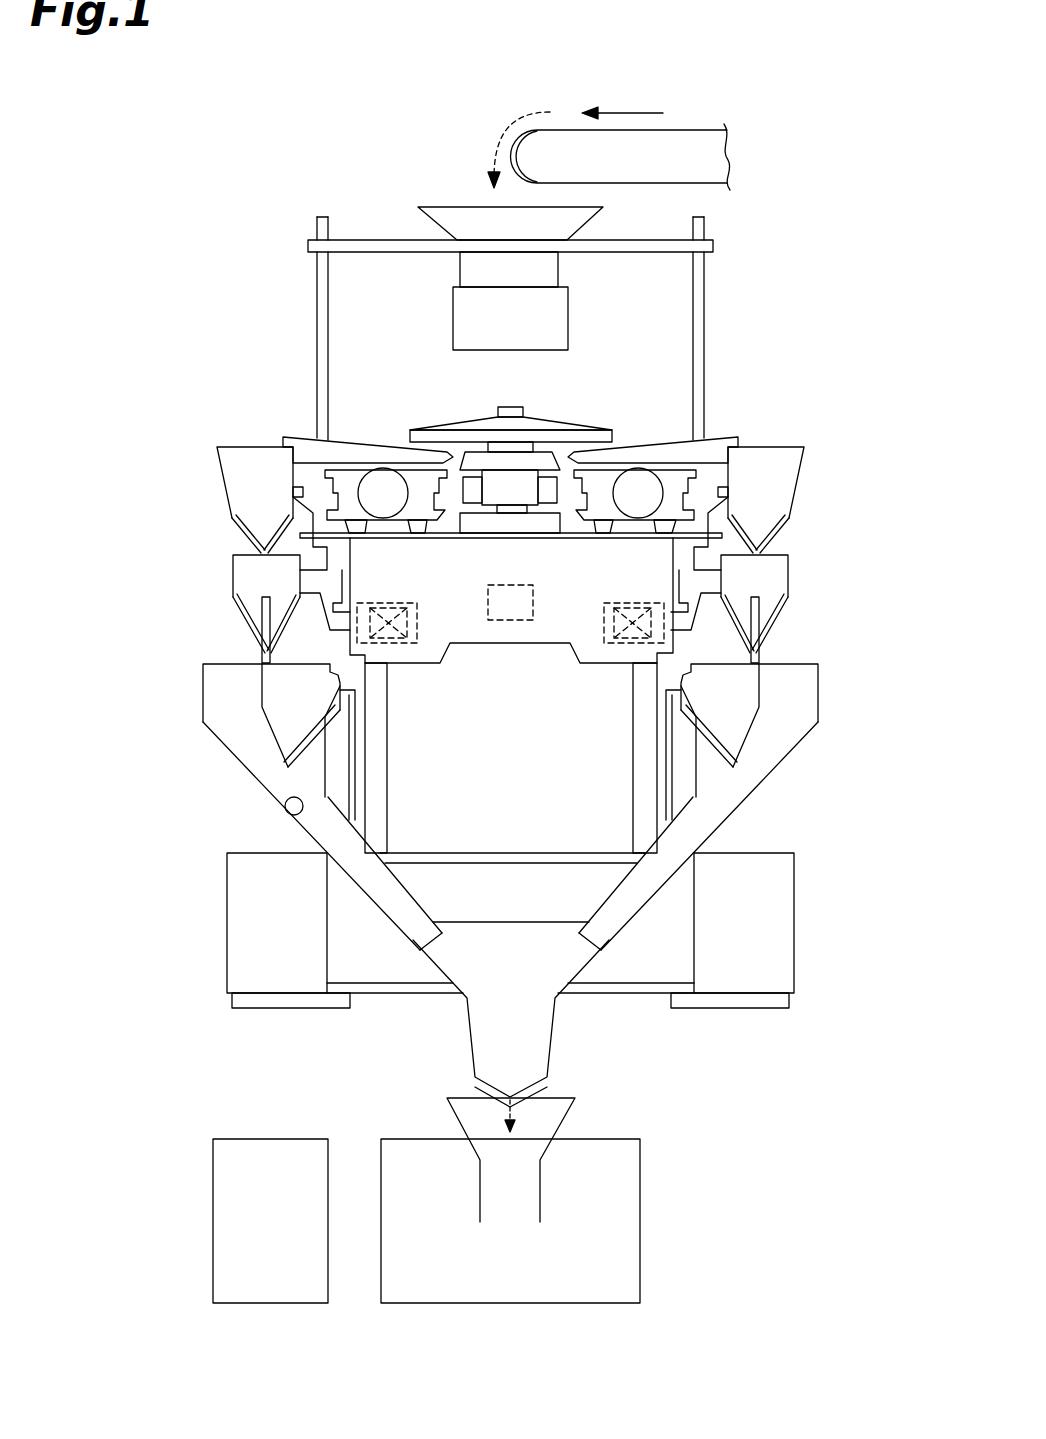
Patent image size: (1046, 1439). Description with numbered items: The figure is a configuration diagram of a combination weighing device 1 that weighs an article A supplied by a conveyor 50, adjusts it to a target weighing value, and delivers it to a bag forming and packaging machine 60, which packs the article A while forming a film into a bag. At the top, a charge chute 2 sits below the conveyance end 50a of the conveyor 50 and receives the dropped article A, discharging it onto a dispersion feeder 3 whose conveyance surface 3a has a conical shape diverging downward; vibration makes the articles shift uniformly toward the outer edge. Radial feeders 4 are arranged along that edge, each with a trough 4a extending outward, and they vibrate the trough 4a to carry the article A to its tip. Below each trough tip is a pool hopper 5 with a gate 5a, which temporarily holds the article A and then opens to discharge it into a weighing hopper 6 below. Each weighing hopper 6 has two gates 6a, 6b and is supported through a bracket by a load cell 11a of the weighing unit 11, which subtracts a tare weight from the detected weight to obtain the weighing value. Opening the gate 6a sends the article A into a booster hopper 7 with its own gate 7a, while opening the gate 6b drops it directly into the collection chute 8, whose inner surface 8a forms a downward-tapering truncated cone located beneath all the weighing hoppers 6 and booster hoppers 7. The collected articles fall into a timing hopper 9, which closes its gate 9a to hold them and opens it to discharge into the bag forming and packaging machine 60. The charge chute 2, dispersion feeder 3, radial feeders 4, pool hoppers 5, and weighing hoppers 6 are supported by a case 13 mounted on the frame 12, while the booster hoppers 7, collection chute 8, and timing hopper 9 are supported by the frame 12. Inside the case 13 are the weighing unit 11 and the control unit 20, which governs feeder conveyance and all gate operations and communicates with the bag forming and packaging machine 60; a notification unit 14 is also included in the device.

The combination weighing device 1 is at (254, 110).
The charge chute 2 is at (453, 212).
The dispersion feeder 3 is at (504, 449).
The conveyance surface 3a is at (443, 419).
The radial feeder 4 is at (303, 439).
The trough 4a is at (337, 446).
The pool hopper 5 is at (512, 500).
The gate 5a is at (240, 543).
The weighing hopper 6 is at (511, 610).
The gate 6a is at (262, 650).
The gate 6b is at (240, 623).
The booster hopper 7 is at (512, 717).
The gate 7a is at (297, 747).
The collection chute 8 is at (491, 818).
The inner surface 8a is at (290, 800).
The timing hopper 9 is at (537, 1046).
The gate 9a is at (510, 1100).
The weighing unit 11 is at (510, 623).
The load cell 11a is at (510, 591).
The frame 12 is at (780, 905).
The case 13 is at (518, 633).
The notification unit 14 is at (213, 1175).
The control unit 20 is at (503, 623).
The conveyor 50 is at (683, 143).
The conveyance end 50a is at (518, 142).
The bag forming and packaging machine 60 is at (627, 1203).
The article A is at (498, 125).